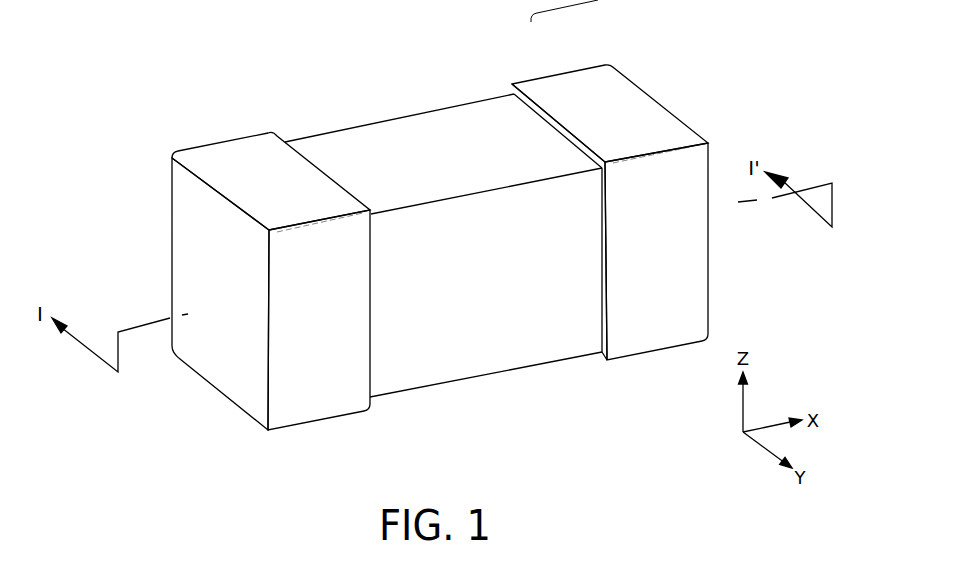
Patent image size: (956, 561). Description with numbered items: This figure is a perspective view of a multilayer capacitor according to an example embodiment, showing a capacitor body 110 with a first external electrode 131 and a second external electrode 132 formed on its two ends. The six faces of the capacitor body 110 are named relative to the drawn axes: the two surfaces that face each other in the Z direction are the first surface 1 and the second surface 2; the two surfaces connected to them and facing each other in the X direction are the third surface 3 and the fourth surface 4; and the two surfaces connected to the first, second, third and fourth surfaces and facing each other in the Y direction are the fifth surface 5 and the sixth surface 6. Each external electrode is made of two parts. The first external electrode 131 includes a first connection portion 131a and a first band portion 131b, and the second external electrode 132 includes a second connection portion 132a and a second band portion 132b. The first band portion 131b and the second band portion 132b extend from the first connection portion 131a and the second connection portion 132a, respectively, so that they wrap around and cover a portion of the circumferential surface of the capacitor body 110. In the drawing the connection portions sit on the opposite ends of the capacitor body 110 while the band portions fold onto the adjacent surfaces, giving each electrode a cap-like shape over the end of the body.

The first surface 1 is at (447, 383).
The second surface 2 is at (476, 108).
The third surface 3 is at (187, 262).
The fourth surface 4 is at (690, 268).
The fifth surface 5 is at (528, 343).
The sixth surface 6 is at (331, 138).
The capacitor body 110 is at (442, 244).
The first external electrode 131 is at (234, 240).
The first connection portion 131a is at (185, 266).
The first band portion 131b is at (271, 160).
The second external electrode 132 is at (636, 180).
The second connection portion 132a is at (583, 83).
The second band portion 132b is at (682, 180).